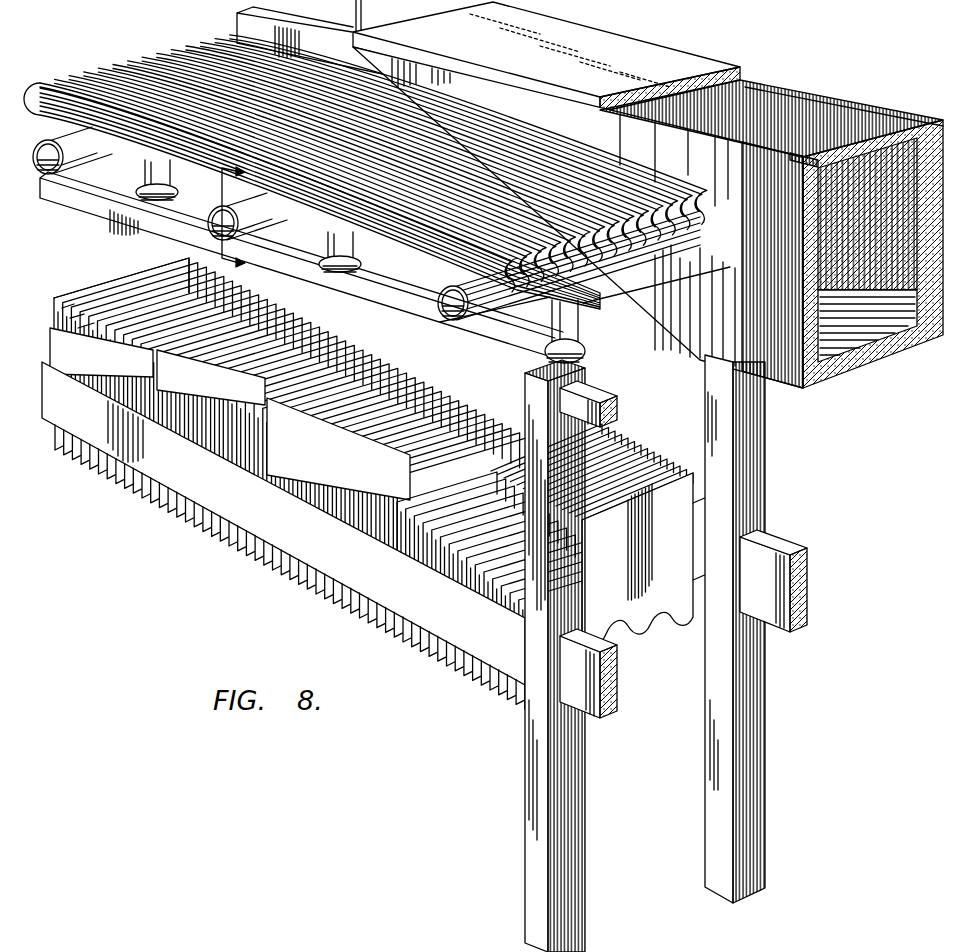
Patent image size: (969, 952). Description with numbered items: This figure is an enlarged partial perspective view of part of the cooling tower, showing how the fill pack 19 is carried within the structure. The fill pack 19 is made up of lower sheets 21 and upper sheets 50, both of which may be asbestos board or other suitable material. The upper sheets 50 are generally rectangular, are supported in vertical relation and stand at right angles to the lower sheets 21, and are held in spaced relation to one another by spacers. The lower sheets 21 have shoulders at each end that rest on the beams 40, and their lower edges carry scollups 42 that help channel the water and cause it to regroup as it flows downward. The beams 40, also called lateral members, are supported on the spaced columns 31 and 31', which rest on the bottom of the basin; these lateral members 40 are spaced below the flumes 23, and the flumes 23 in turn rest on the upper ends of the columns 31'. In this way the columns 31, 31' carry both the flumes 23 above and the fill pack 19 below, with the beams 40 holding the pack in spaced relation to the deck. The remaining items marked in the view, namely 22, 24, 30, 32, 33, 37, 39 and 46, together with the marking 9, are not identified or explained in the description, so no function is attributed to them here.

The fill pack 19 is at (450, 670).
The lower fill pack sheets 21 is at (627, 452).
The channel bottom wall 22 is at (857, 365).
The flumes 23 is at (773, 83).
The cover plate 24 is at (633, 30).
The cross tubes 30 is at (443, 300).
The columns 31 is at (574, 656).
The columns 31' is at (756, 629).
The foot disc 32 is at (577, 357).
The grate rods 33 is at (110, 68).
The hanger stud 37 is at (583, 322).
The stop block 39 is at (616, 404).
The beams 40 is at (616, 712).
The scollups 42 is at (640, 647).
The hanger foot 46 is at (346, 261).
The upper fill pack sheets 50 is at (107, 282).
The section line 9- 9 is at (245, 227).